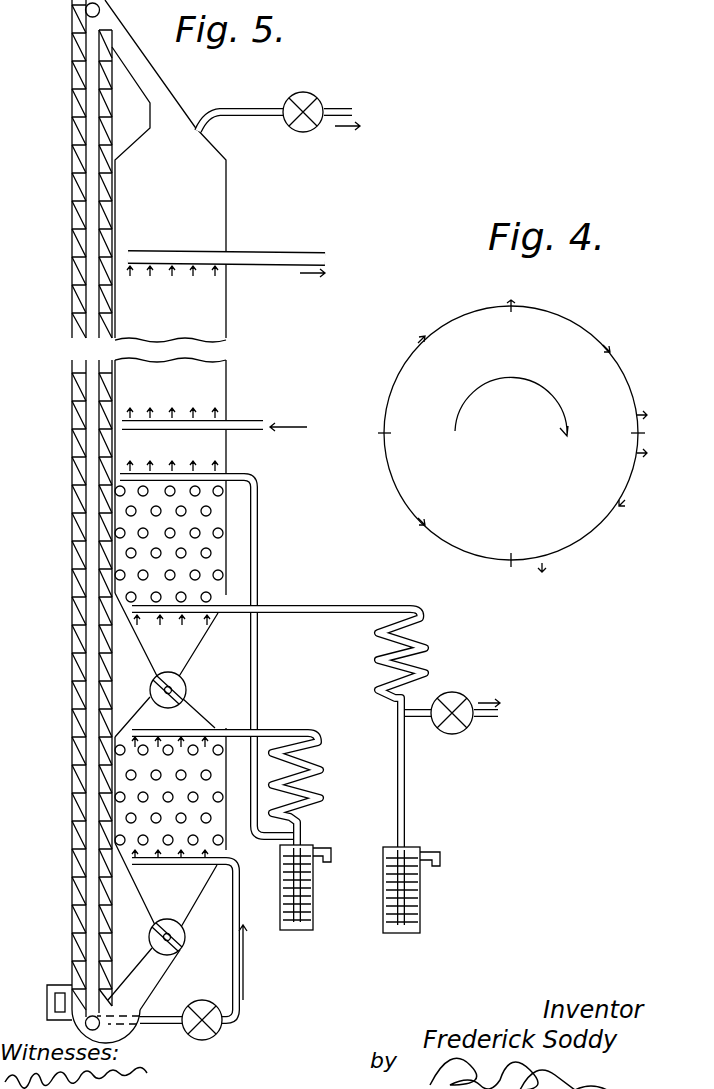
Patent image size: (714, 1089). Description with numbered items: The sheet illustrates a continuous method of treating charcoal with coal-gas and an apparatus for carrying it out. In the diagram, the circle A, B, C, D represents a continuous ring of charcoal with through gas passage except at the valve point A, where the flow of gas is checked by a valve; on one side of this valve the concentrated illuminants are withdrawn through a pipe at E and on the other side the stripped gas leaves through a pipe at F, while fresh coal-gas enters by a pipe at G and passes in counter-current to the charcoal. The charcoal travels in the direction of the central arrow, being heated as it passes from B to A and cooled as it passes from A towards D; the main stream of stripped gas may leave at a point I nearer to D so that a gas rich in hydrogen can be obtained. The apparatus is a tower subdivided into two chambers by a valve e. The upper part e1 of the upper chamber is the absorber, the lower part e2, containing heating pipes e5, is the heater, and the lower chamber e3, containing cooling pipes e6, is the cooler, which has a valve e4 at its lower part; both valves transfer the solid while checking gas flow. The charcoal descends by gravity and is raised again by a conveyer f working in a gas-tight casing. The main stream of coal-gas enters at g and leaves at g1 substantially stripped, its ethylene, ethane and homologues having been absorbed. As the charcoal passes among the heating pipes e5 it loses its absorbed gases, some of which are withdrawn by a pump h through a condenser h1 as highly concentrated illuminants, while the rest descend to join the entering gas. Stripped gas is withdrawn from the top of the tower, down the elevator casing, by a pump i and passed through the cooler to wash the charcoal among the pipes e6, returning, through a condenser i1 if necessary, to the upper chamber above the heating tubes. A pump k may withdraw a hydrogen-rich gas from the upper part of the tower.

In FIG. 5, the conveyer f is at (90, 497).
In FIG. 5, the pump k is at (302, 123).
In FIG. 5, the coal-gas inlet g is at (250, 427).
In FIG. 5, the stripped gas outlet g1 is at (277, 263).
In FIG. 5, the valve e is at (177, 690).
In FIG. 5, the absorber e1 is at (172, 368).
In FIG. 5, the heater e2 is at (213, 520).
In FIG. 5, the cooler e3 is at (213, 780).
In FIG. 5, the valve e4 is at (185, 937).
In FIG. 5, the heating pipes e5 is at (213, 551).
In FIG. 5, the cooling pipes e6 is at (205, 820).
In FIG. 5, the pump h is at (446, 730).
In FIG. 5, the condenser h1 is at (423, 643).
In FIG. 5, the pump i is at (212, 1033).
In FIG. 5, the condenser i1 is at (317, 770).
In FIG. 4, the valve point A is at (625, 437).
In FIG. 4, the point B of charcoal ring B is at (513, 322).
In FIG. 4, the point C of charcoal ring C is at (395, 433).
In FIG. 4, the point D of charcoal ring D is at (513, 548).
In FIG. 4, the illuminants outlet pipe E is at (652, 411).
In FIG. 4, the stripped gas outlet pipe F is at (649, 461).
In FIG. 4, the coal-gas inlet pipe G is at (455, 307).
In FIG. 4, the main stripped gas outlet point I is at (538, 580).